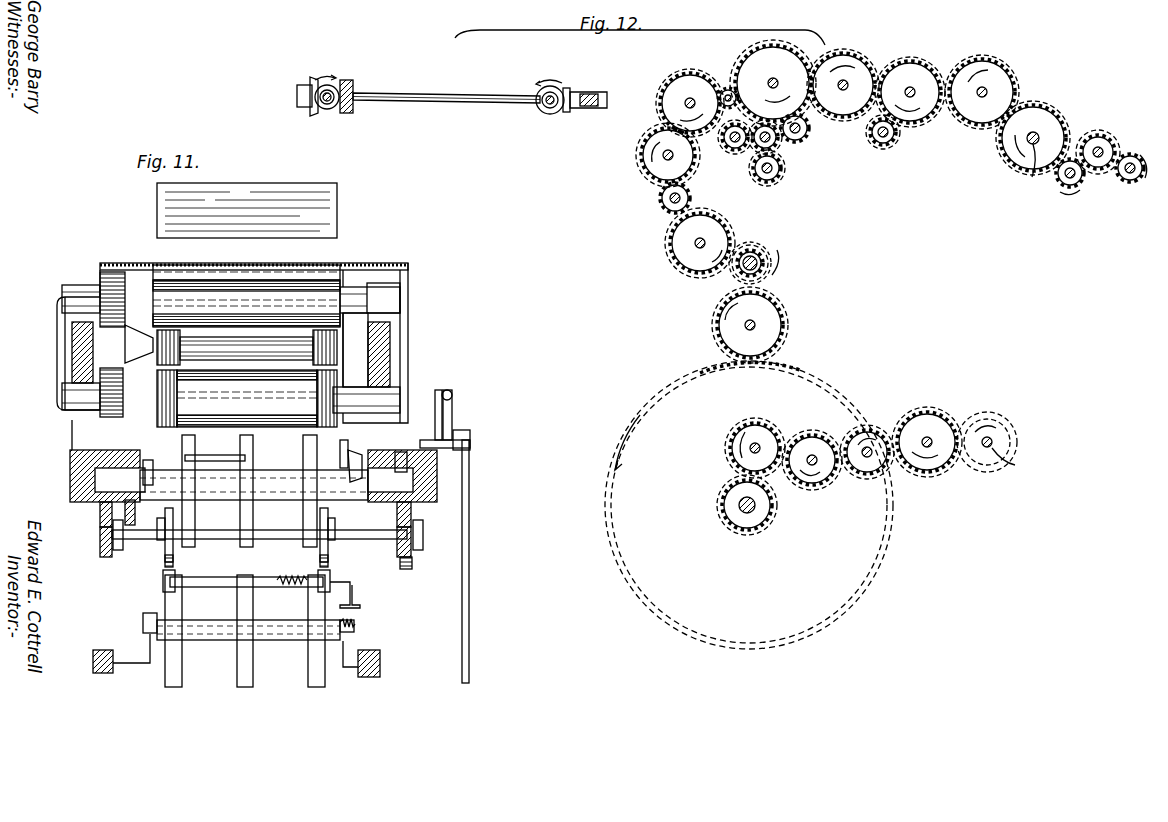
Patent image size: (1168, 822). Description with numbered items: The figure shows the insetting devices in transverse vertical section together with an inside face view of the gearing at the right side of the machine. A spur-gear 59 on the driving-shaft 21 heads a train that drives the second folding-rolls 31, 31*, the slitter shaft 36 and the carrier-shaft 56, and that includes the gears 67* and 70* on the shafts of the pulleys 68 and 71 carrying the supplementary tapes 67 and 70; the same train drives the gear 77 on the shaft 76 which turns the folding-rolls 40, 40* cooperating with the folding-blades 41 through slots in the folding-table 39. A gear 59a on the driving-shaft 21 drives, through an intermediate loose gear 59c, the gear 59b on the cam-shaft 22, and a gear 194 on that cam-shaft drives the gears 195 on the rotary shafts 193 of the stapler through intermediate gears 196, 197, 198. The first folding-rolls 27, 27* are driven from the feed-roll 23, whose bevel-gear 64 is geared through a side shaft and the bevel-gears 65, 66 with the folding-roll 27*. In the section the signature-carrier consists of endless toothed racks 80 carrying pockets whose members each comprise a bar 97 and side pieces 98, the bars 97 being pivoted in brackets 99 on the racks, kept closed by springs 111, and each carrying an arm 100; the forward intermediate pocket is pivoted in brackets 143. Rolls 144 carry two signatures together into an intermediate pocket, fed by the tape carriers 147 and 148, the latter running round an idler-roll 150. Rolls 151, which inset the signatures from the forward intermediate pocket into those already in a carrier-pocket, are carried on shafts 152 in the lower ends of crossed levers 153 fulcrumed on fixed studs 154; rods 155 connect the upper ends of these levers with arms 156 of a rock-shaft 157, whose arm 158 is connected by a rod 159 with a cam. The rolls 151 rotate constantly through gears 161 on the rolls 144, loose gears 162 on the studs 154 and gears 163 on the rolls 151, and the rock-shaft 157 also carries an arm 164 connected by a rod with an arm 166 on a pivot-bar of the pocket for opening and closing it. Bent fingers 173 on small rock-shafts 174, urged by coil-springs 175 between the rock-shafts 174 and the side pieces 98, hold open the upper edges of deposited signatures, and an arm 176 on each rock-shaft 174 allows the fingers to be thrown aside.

In FIG. 12, the driving-shaft 21 is at (756, 258).
In FIG. 12, the cam-shaft 22 is at (745, 512).
In FIG. 12, the feed-roll 23 is at (327, 110).
In FIG. 12, the folding-rolls 27 is at (546, 114).
In FIG. 12, the folding-rolls 31 is at (733, 143).
In FIG. 12, the slitter shaft 36 is at (768, 178).
In FIG. 11, the folding-table 39 is at (404, 264).
In FIG. 11, the folding-rolls 40 is at (246, 296).
In FIG. 11, the folding-blades 41 is at (247, 210).
In FIG. 12, the carrier-shaft 56 is at (1130, 182).
In FIG. 12, the spur-gear 59 is at (742, 245).
In FIG. 12, the gear 59a is at (770, 278).
In FIG. 12, the gear 59b is at (749, 505).
In FIG. 12, the intermediate loose gear 59c is at (783, 330).
In FIG. 12, the bevel-gear 64 is at (445, 102).
In FIG. 12, the bevel-gear 65 is at (302, 88).
In FIG. 12, the bevel-gear 66 is at (572, 94).
In FIG. 12, the supplementary carrier tapes 67 is at (724, 93).
In FIG. 12, the carrying pulleys 68 is at (729, 92).
In FIG. 12, the supplementary carrier tapes 70 is at (895, 132).
In FIG. 12, the carrying pulleys 71 is at (886, 142).
In FIG. 12, the shaft 76 is at (1062, 176).
In FIG. 12, the gear 77 is at (1085, 180).
In FIG. 11, the endless toothed racks 80 is at (103, 673).
In FIG. 11, the horizontal bar 97 is at (278, 486).
In FIG. 11, the side pieces 98 is at (240, 464).
In FIG. 11, the brackets 99 is at (140, 663).
In FIG. 11, the arm 100 is at (145, 614).
In FIG. 11, the springs 111 is at (356, 626).
In FIG. 11, the brackets 143 is at (130, 525).
In FIG. 11, the continuously-rotating rolls 144 is at (247, 398).
In FIG. 11, the tape carriers 147 is at (247, 398).
In FIG. 11, the tape carriers 148 is at (335, 345).
In FIG. 11, the idler-roll 150 is at (247, 347).
In FIG. 11, the rolls 151 is at (165, 555).
In FIG. 11, the shafts 152 is at (259, 524).
In FIG. 11, the crossed levers 153 is at (145, 462).
In FIG. 11, the fixed studs 154 is at (100, 482).
In FIG. 11, the rods 155 is at (452, 408).
In FIG. 11, the arms 156 is at (438, 402).
In FIG. 11, the rock-shaft 157 is at (238, 446).
In FIG. 11, the arm 158 is at (470, 437).
In FIG. 11, the rod 159 is at (486, 561).
In FIG. 11, the gears 161 is at (72, 432).
In FIG. 11, the loose gears 162 is at (100, 512).
In FIG. 11, the gears 163 is at (406, 570).
In FIG. 11, the arm 164 is at (334, 449).
In FIG. 11, the arm 166 is at (352, 472).
In FIG. 11, the bent fingers 173 is at (163, 578).
In FIG. 11, the small rock-shafts 174 is at (218, 587).
In FIG. 11, the coil-springs 175 is at (287, 591).
In FIG. 11, the arm 176 is at (352, 592).
In FIG. 12, the rotary shafts 193 is at (930, 440).
In FIG. 12, the gear 194 is at (742, 488).
In FIG. 12, the gears 195 is at (905, 432).
In FIG. 12, the intermediate gear 196 is at (752, 435).
In FIG. 12, the intermediate gear 197 is at (815, 445).
In FIG. 12, the intermediate gear 198 is at (855, 470).